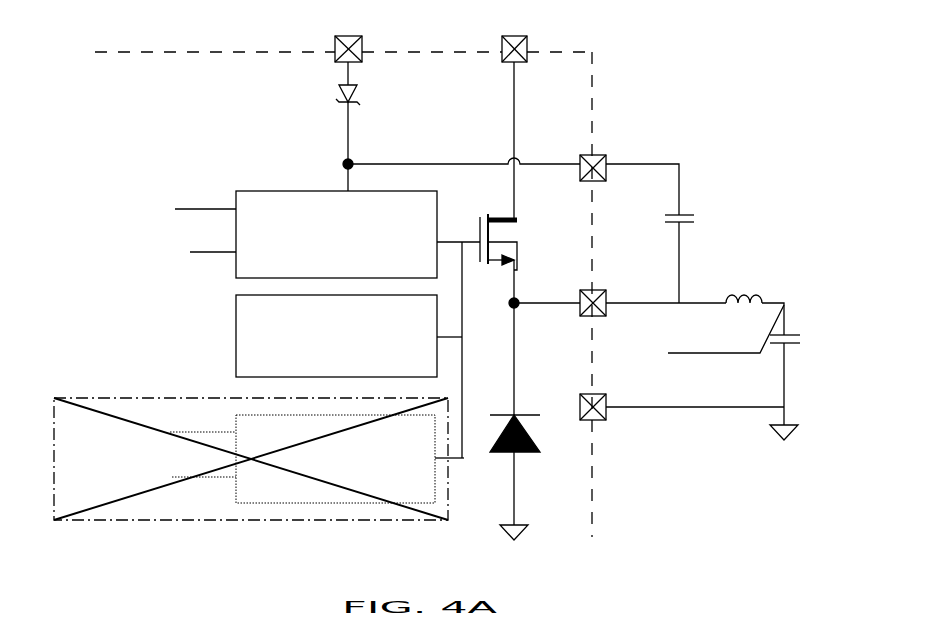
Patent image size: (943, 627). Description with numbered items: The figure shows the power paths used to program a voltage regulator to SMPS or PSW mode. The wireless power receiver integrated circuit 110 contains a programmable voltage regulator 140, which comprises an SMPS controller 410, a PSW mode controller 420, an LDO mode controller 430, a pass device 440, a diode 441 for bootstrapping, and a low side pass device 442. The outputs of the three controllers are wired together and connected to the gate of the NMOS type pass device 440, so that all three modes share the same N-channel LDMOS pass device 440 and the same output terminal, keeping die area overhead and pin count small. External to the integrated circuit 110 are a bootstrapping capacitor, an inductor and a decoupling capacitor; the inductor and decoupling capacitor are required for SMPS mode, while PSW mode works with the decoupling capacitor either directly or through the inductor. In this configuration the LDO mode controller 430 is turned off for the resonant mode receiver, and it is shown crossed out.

The integrated circuit 110 is at (190, 52).
The programmable voltage regulator 140 is at (485, 236).
The SMPS controller 410 is at (268, 234).
The PSW mode controller 420 is at (336, 336).
The LDO mode controller 430 is at (251, 459).
The pass device 440 is at (481, 233).
The diode 441 is at (351, 101).
The low side pass device 442 is at (514, 415).